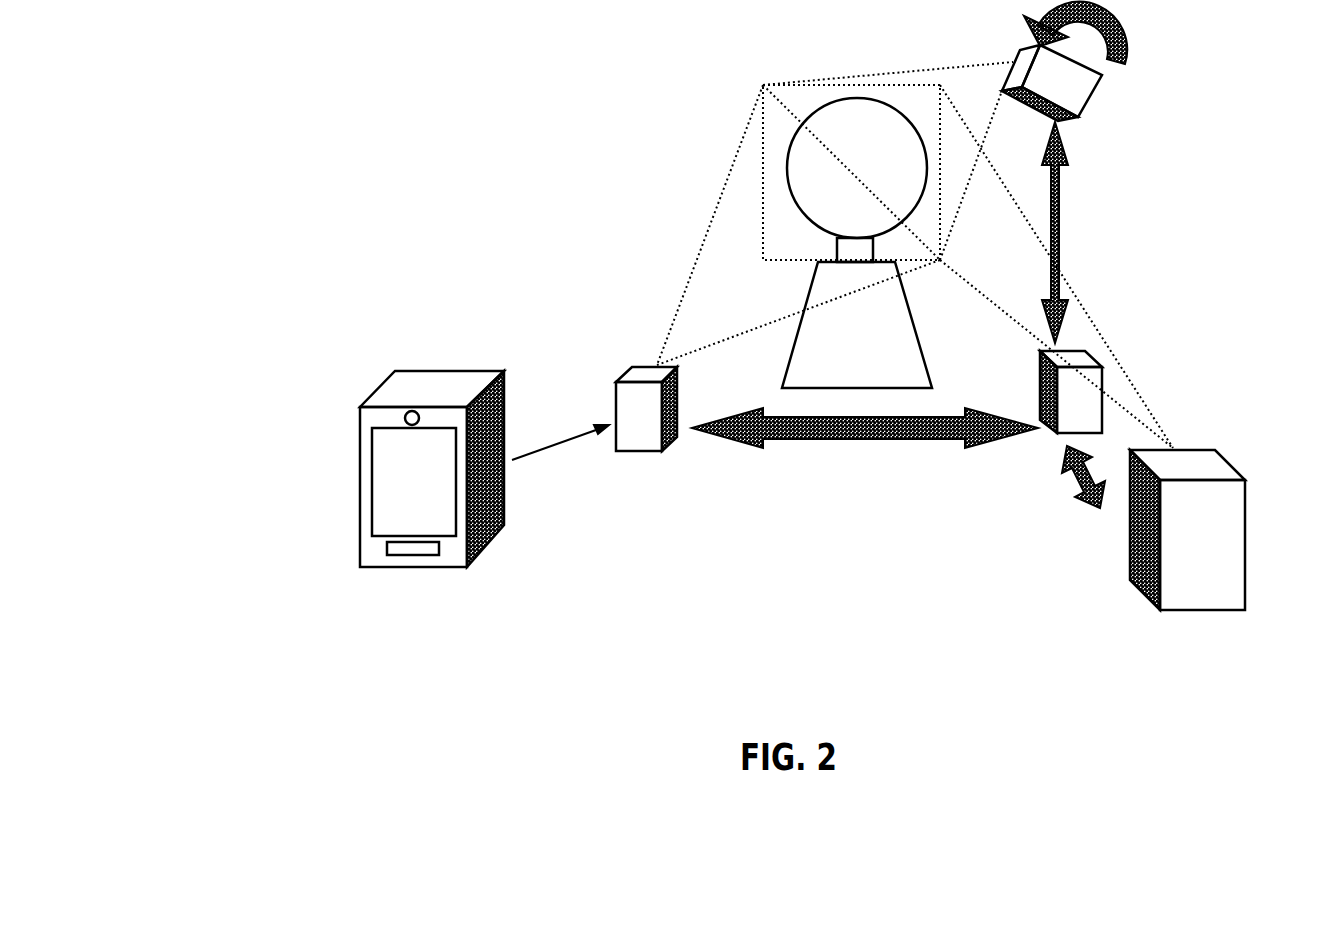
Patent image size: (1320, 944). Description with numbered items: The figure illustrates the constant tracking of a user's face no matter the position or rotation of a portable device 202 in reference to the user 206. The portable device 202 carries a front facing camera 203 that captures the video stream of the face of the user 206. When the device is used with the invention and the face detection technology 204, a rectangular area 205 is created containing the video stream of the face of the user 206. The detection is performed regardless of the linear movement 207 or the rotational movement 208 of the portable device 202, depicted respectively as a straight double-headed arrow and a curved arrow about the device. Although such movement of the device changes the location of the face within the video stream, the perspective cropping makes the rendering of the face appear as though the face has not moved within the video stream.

The portable device 202 is at (442, 381).
The front facing camera 203 is at (389, 423).
The face detection technology 204 is at (693, 319).
The rectangular area 205 is at (791, 243).
The user 206 is at (875, 371).
The linear movement of the portable device 207 is at (848, 462).
The rotational movement of the portable device 208 is at (1144, 45).